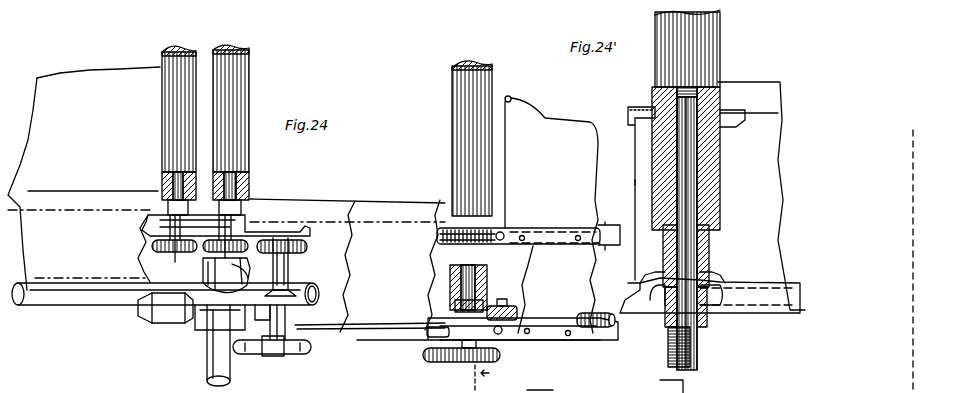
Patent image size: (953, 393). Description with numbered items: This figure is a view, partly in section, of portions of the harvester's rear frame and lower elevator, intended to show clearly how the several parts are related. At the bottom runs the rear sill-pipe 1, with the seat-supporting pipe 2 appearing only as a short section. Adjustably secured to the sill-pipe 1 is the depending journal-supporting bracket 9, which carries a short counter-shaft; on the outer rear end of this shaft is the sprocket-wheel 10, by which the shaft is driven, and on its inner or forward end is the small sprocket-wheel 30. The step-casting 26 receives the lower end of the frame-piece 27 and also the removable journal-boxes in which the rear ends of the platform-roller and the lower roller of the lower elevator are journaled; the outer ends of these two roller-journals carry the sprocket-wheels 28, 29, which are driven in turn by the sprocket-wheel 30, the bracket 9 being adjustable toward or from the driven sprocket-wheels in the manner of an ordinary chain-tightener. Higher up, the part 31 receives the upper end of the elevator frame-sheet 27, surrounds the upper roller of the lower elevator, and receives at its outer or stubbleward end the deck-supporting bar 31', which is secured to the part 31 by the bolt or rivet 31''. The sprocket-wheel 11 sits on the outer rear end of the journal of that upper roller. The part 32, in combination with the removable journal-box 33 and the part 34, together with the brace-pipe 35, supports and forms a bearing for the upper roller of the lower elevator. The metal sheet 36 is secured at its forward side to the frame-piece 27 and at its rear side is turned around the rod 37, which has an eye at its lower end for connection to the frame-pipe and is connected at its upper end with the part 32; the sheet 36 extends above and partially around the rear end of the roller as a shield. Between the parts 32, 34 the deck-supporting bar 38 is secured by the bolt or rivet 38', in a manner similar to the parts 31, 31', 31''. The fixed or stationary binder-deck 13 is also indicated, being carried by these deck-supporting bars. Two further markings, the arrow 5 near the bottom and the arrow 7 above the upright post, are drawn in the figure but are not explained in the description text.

In FIG. 24, the rear sill-pipe 1 is at (68, 303).
In FIG. 24, the seat-supporting pipe 2 is at (206, 363).
In FIG. 24, the direction arrow 5 is at (478, 379).
In FIG. 24, the post 7 is at (485, 56).
In FIG. 24, the journal-supporting bracket 9 is at (282, 267).
In FIG. 24, the sprocket-wheel 10 is at (277, 356).
In FIG. 24, the sprocket-wheel 11 is at (461, 360).
In FIG. 24, the stationary binder-deck 13 is at (551, 214).
In FIG. 24, the step-casting 26 is at (248, 224).
In FIG. 24, the frame-piece 27 is at (402, 203).
In FIG. 24', the frame-piece 27 is at (784, 96).
In FIG. 24, the sprocket-wheel 28 is at (172, 244).
In FIG. 24, the sprocket-wheel 29 is at (216, 244).
In FIG. 24, the small sprocket-wheel 30 is at (229, 274).
In FIG. 24, the part receiving upper end of frame-sheet 31 is at (518, 244).
In FIG. 24', the part receiving upper end of frame-sheet 31 is at (630, 183).
In FIG. 24, the deck-supporting bar 31' is at (606, 227).
In FIG. 24, the bolt or rivet 31'' is at (528, 222).
In FIG. 24, the bearing part 32 is at (437, 339).
In FIG. 24', the bearing part 32 is at (628, 286).
In FIG. 24', the removable journal-box 33 is at (667, 326).
In FIG. 24, the bearing part 34 is at (508, 340).
In FIG. 24, the brace-pipe 35 is at (613, 328).
In FIG. 24, the metal sheet 36 is at (390, 266).
In FIG. 24', the metal sheet 36 is at (633, 185).
In FIG. 24, the rod 37 is at (188, 320).
In FIG. 24', the rod 37 is at (790, 302).
In FIG. 24, the deck-supporting bar 38 is at (520, 352).
In FIG. 24, the bolt or rivet 38' is at (523, 302).